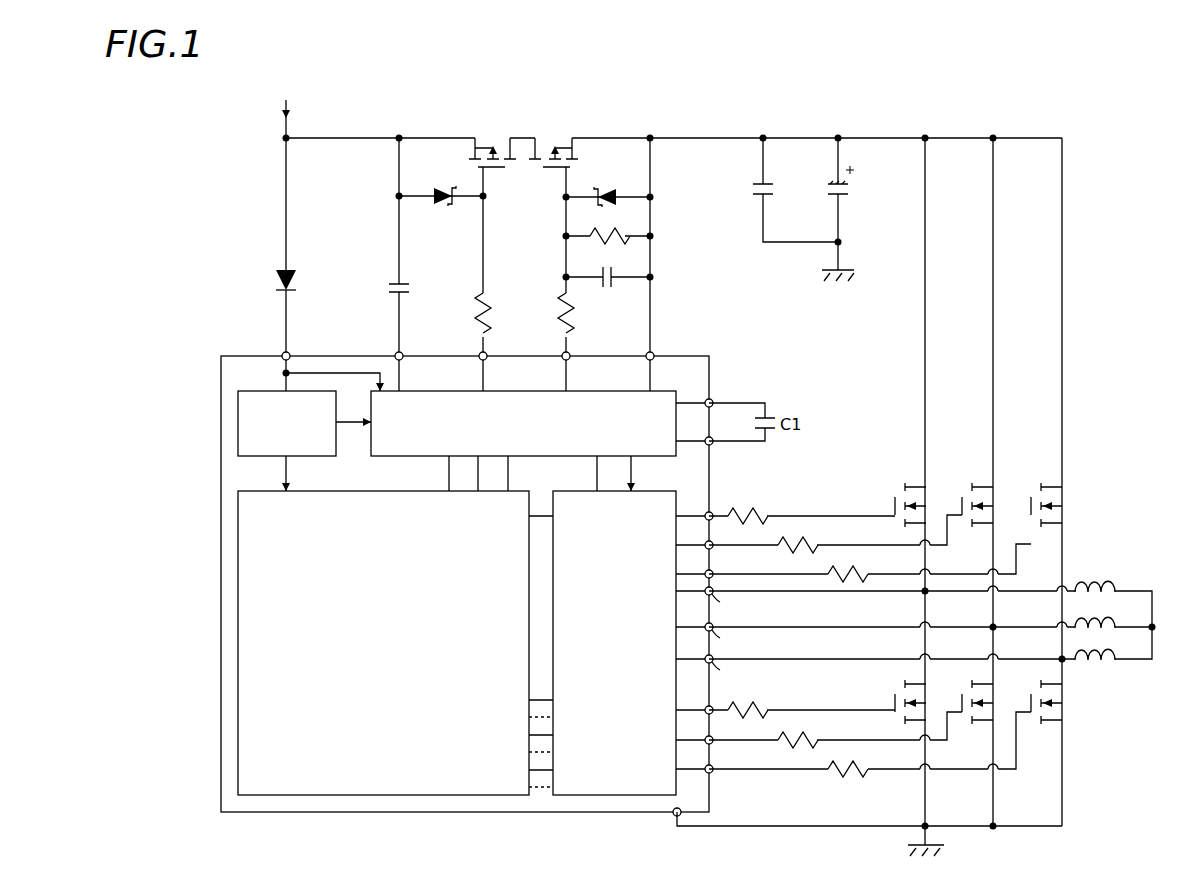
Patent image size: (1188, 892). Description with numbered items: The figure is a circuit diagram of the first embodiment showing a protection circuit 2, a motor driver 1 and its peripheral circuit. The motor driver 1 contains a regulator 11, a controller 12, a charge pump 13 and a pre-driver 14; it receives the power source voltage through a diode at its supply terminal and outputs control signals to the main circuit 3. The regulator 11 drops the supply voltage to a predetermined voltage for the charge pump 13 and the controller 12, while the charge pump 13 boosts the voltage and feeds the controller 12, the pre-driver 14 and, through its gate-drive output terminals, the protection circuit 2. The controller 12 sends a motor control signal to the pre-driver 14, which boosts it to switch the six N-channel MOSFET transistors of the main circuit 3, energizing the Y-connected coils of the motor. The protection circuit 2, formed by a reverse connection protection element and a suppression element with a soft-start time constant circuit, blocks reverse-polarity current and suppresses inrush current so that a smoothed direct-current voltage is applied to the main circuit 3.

The motor driver 1 is at (698, 356).
The protection circuit 2 is at (714, 126).
The main circuit 3 is at (877, 451).
The regulator 11 is at (242, 391).
The controller 12 is at (242, 490).
The charge pump 13 is at (659, 391).
The pre-driver 14 is at (660, 490).